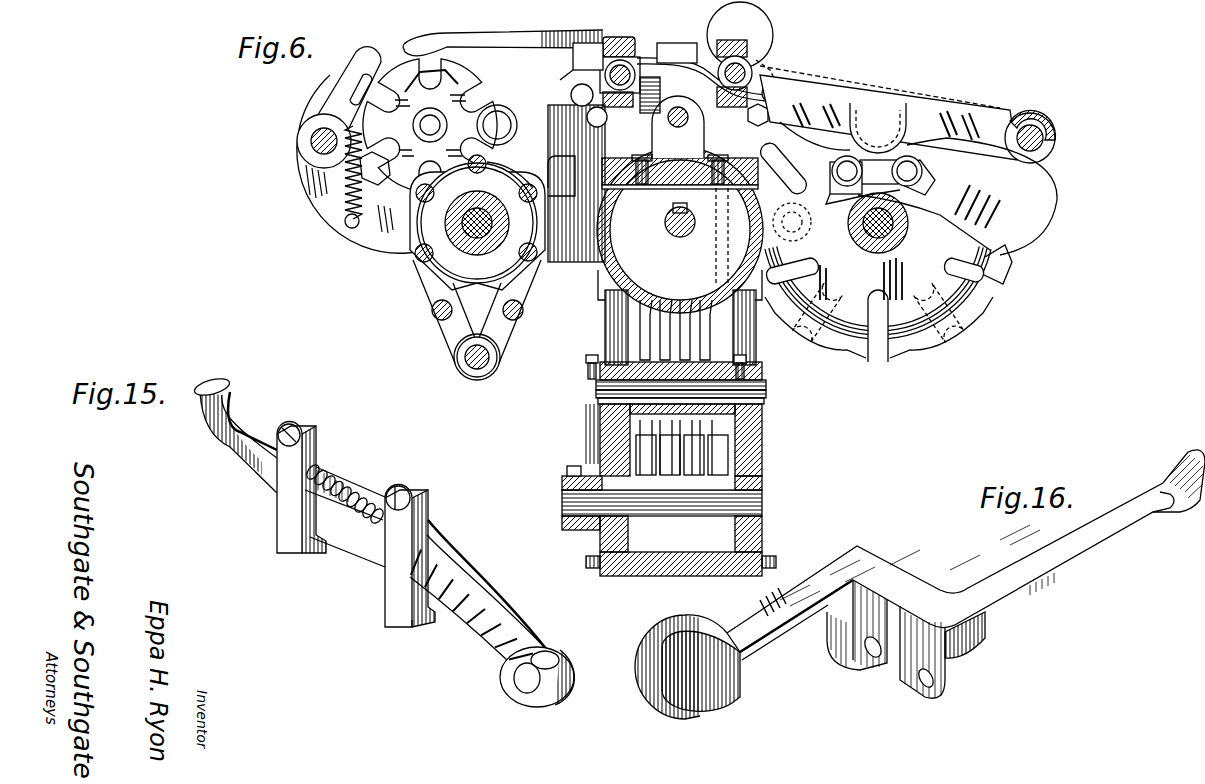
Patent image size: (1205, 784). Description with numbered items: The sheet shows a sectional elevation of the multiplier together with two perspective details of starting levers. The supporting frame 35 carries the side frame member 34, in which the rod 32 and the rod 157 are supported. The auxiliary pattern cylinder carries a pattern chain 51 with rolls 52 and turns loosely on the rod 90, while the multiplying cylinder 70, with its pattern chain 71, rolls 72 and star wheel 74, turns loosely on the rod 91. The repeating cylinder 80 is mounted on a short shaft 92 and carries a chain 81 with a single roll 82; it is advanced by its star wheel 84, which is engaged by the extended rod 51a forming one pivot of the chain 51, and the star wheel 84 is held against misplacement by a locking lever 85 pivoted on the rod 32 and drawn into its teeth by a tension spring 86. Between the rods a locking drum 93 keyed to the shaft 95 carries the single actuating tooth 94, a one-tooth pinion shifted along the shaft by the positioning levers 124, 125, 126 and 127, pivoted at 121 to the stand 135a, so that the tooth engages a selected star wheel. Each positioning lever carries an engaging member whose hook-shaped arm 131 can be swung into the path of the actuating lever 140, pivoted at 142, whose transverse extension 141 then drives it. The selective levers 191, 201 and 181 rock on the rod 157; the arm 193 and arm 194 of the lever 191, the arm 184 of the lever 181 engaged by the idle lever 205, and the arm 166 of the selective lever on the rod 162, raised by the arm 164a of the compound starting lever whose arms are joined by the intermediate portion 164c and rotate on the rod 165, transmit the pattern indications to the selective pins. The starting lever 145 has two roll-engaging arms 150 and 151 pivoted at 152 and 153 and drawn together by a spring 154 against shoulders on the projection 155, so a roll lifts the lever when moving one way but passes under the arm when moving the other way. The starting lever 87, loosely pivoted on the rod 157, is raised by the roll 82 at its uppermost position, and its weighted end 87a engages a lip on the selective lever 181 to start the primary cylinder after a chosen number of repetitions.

In FIG. 6, the starting lever 87 is at (507, 40).
In FIG. 16, the starting lever 87 is at (1048, 580).
In FIG. 16, the weighted end 87a is at (735, 698).
In FIG. 6, the star wheel 84 is at (410, 78).
In FIG. 6, the locking lever 85 is at (358, 75).
In FIG. 6, the repeating cylinder 80 is at (472, 90).
In FIG. 6, the short shaft 92 is at (436, 124).
In FIG. 6, the roll 82 is at (508, 120).
In FIG. 6, the rod 32 is at (310, 141).
In FIG. 6, the tension spring 86 is at (345, 210).
In FIG. 6, the chain 81 is at (380, 180).
In FIG. 6, the side frame member 34 is at (360, 222).
In FIG. 6, the rod 51a is at (486, 166).
In FIG. 6, the pattern chain 51 is at (533, 190).
In FIG. 6, the rod 90 is at (425, 258).
In FIG. 6, the rolls 52 is at (493, 362).
In FIG. 6, the locking drum 93 is at (600, 262).
In FIG. 6, the shaft 95 is at (668, 228).
In FIG. 6, the actuating tooth 94 is at (676, 124).
In FIG. 6, the rod 157 is at (590, 62).
In FIG. 6, the arm 194 is at (576, 90).
In FIG. 6, the selective lever 191 is at (616, 38).
In FIG. 6, the longitudinally-extending arm 193 is at (650, 46).
In FIG. 6, the idle lever 205 is at (677, 53).
In FIG. 6, the arm 184 is at (667, 95).
In FIG. 6, the selective lever 201 is at (626, 108).
In FIG. 6, the rod 162 is at (748, 62).
In FIG. 6, the arm 166 is at (760, 82).
In FIG. 6, the selective lever 181 is at (750, 112).
In FIG. 6, the arm 164a is at (980, 112).
In FIG. 6, the intermediate portion 164c is at (1048, 118).
In FIG. 6, the rod 165 is at (1046, 142).
In FIG. 6, the pattern chain 71 is at (842, 160).
In FIG. 6, the rolls 72 is at (910, 173).
In FIG. 6, the multiplying cylinder 70 is at (860, 201).
In FIG. 6, the rod 91 is at (886, 224).
In FIG. 6, the star wheel 74 is at (1004, 277).
In FIG. 6, the positioning lever 126 is at (595, 370).
In FIG. 6, the positioning lever 127 is at (640, 380).
In FIG. 6, the pivot 121 is at (600, 400).
In FIG. 6, the actuating lever 140 is at (590, 416).
In FIG. 6, the pivot 142 is at (566, 498).
In FIG. 6, the positioning lever 125 is at (748, 372).
In FIG. 6, the positioning lever 124 is at (766, 390).
In FIG. 6, the transverse extension 141 is at (705, 428).
In FIG. 6, the hook-shaped arm 131 is at (712, 462).
In FIG. 6, the housing wall 135a is at (752, 470).
In FIG. 6, the supporting frame 35 is at (645, 572).
In FIG. 15, the pivot 153 is at (297, 437).
In FIG. 15, the spring 154 is at (322, 470).
In FIG. 15, the pivot 152 is at (396, 484).
In FIG. 15, the roll-engaging arm 151 is at (290, 548).
In FIG. 15, the projection 155 is at (350, 536).
In FIG. 15, the starting lever 145 is at (470, 574).
In FIG. 15, the roll-engaging arm 150 is at (403, 612).